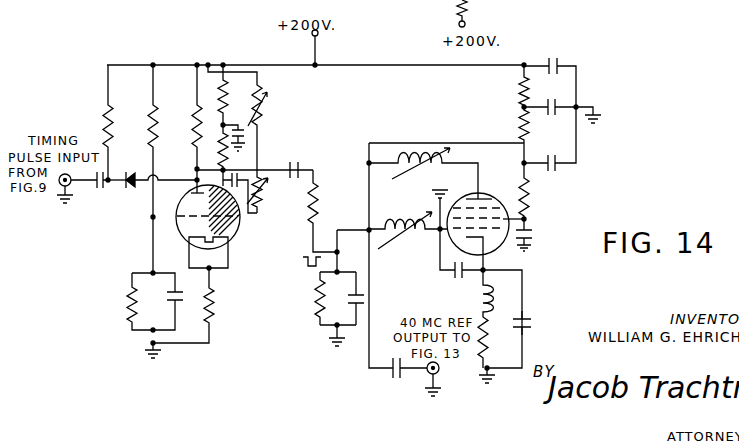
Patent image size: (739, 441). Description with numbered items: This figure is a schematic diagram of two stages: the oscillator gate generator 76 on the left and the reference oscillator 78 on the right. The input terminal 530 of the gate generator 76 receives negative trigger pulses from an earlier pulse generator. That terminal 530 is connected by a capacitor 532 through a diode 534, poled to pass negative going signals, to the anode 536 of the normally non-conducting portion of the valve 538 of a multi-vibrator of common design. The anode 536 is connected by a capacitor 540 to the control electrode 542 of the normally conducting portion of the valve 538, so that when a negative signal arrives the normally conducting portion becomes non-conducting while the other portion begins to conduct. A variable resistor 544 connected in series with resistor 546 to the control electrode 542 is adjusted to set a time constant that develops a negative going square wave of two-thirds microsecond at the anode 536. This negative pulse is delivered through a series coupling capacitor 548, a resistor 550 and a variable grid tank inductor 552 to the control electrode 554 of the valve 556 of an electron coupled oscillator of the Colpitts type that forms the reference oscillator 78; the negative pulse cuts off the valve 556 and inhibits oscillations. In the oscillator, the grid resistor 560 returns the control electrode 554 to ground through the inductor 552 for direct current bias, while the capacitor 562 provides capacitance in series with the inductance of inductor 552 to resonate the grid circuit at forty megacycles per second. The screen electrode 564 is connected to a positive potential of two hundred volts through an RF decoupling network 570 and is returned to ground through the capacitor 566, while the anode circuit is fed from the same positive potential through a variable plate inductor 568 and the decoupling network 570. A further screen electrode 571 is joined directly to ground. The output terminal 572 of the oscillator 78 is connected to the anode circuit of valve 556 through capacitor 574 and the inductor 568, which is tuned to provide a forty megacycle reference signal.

The gate generator 76 is at (184, 45).
The reference oscillator 78 is at (454, 129).
The input terminal 530 is at (60, 187).
The capacitor 532 is at (92, 184).
The diode 534 is at (131, 172).
The anode 536 is at (196, 198).
The valve 538 is at (231, 241).
The capacitor 540 is at (258, 206).
The control electrode 542 is at (238, 216).
The variable resistor 544 is at (250, 125).
The resistor 546 is at (266, 188).
The series coupling capacitor 548 is at (300, 166).
The resistor 550 is at (317, 204).
The variable grid tank inductor 552 is at (400, 224).
The control electrode 554 is at (452, 246).
The valve 556 is at (481, 196).
The grid resistor 560 is at (318, 304).
The capacitor 562 is at (360, 304).
The screen electrode 564 is at (494, 220).
The capacitor 566 is at (537, 236).
The variable plate inductor 568 is at (412, 157).
The RF decoupling network 570 is at (572, 88).
The screen electrode 571 is at (494, 214).
The output terminal 572 is at (439, 373).
The capacitor 574 is at (391, 374).